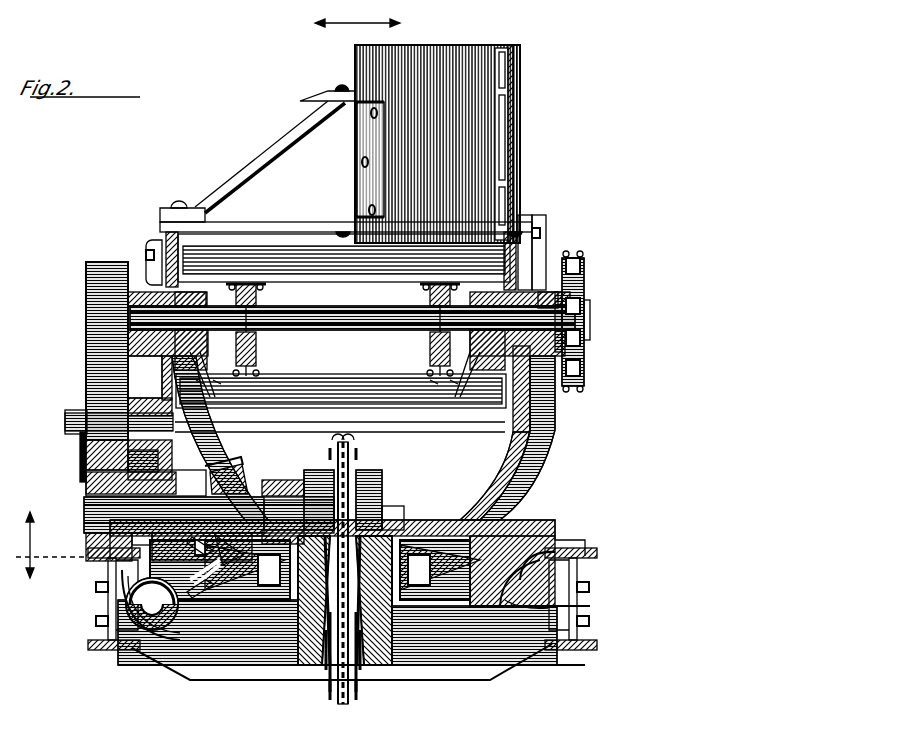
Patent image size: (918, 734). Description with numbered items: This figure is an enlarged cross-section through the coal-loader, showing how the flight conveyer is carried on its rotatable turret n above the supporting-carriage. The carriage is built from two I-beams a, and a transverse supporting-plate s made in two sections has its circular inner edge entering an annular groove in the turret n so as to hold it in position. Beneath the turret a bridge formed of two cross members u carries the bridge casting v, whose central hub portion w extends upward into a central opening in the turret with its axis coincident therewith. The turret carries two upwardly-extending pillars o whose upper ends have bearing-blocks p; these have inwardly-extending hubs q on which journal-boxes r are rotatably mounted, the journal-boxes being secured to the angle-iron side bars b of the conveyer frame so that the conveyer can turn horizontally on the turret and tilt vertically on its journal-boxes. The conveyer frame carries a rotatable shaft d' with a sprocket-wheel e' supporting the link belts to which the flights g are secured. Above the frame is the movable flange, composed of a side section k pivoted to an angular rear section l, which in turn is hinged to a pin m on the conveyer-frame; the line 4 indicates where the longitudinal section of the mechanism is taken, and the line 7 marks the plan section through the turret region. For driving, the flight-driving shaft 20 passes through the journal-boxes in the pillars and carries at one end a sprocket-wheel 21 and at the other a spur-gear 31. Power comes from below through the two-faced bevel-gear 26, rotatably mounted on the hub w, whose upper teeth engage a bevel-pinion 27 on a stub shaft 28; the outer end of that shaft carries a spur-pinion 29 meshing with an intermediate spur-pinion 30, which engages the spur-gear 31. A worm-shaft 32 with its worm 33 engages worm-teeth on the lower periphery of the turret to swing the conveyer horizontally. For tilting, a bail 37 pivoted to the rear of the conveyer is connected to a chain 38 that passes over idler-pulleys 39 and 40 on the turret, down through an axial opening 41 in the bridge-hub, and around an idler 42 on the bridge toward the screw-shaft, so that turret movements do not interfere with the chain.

The section line 4 is at (343, 85).
The angular rear section l is at (470, 60).
The side section k is at (515, 130).
The pin m is at (338, 82).
The side bars b is at (170, 238).
The flights g is at (343, 270).
The sprocket-wheel e' is at (343, 328).
The flight-driving shaft 20 is at (303, 330).
The rotatable shaft d' is at (349, 331).
The inwardly-extending hubs q is at (218, 352).
The journal-boxes r is at (228, 352).
The bail 37 is at (440, 432).
The spur-gear 31 is at (88, 272).
The intermediate spur-pinion 30 is at (96, 390).
The spur-pinion 29 is at (90, 482).
The stub shaft 28 is at (88, 508).
The bevel-pinion 27 is at (232, 478).
The central hub portion w is at (292, 490).
The idler-pulley 40 is at (356, 470).
The chain 38 is at (356, 508).
The axial opening 41 is at (370, 672).
The idler 42 is at (352, 696).
The pillars o is at (546, 404).
The sprocket-wheel 21 is at (580, 290).
The bearing-blocks p is at (540, 290).
The turret n is at (420, 522).
The two-faced bevel-gear 26 is at (215, 600).
The bridge casting v is at (337, 600).
The cross members u is at (205, 672).
The I-beams a is at (105, 632).
The supporting-plate s is at (88, 556).
The section line 7 is at (45, 545).
The worm-shaft 32 is at (150, 606).
The worm 33 is at (168, 628).
The idler-pulley 39 is at (529, 616).